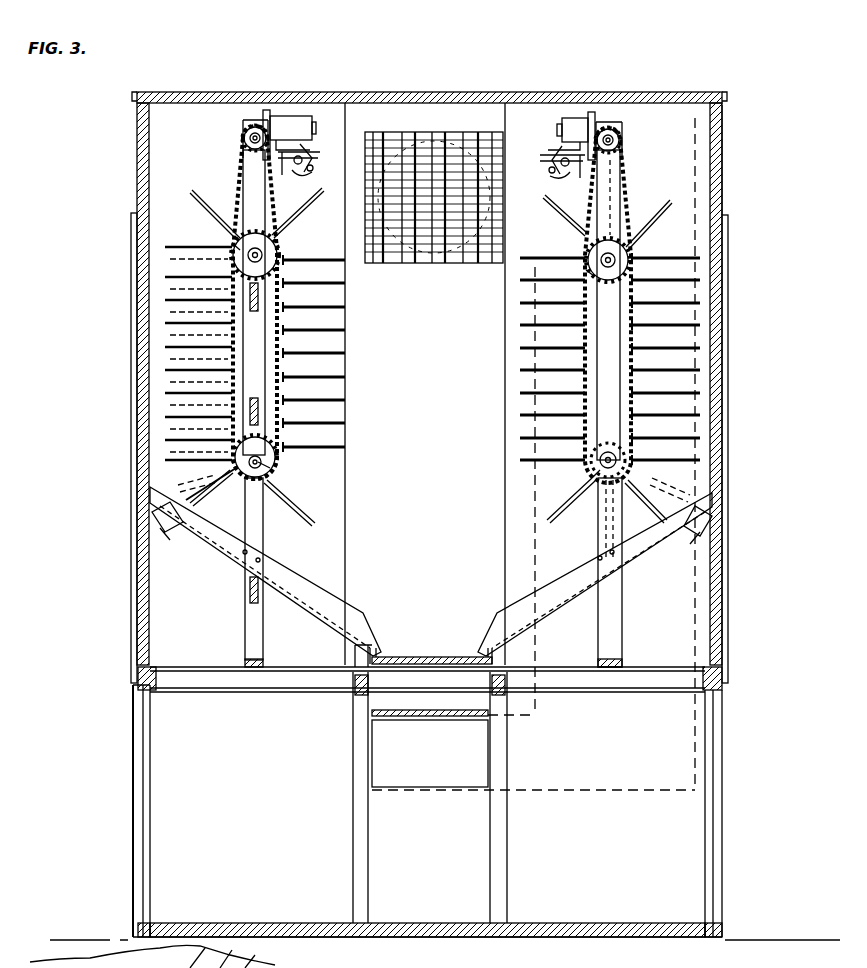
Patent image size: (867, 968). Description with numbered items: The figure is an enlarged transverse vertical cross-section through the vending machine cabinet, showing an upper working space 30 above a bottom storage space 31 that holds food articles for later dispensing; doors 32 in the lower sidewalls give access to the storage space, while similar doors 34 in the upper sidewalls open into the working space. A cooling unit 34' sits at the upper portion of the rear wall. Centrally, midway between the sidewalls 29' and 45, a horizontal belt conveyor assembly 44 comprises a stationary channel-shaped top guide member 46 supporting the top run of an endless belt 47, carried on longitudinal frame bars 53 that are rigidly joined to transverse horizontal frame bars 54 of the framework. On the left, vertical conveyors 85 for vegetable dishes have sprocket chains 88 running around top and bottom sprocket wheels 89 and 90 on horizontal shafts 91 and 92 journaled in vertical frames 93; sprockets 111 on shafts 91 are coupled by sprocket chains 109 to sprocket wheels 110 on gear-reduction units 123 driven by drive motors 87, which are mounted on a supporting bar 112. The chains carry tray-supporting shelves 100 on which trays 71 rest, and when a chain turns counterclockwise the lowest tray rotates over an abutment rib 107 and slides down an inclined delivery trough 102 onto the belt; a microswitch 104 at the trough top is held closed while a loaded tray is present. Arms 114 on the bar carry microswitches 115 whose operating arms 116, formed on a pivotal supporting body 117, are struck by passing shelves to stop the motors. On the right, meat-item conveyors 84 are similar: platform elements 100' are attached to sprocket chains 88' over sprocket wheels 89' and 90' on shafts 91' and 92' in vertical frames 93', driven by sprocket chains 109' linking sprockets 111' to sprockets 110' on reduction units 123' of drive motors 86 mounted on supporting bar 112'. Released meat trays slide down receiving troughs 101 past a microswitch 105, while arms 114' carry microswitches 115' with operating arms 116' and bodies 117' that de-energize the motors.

The sidewall 29' is at (740, 160).
The upper working space 30 is at (195, 143).
The bottom storage space 31 is at (230, 786).
The doors 32 is at (135, 745).
The doors 34 is at (431, 448).
The cooling unit 34' is at (434, 219).
The belt conveyor assembly 44 is at (417, 722).
The sidewall 45 is at (143, 141).
The top guide member 46 is at (370, 658).
The endless belt 47 is at (400, 657).
The belt-conveyor frame bars 53 is at (358, 700).
The horizontal frame bars 54 is at (282, 692).
The trays 71 is at (429, 358).
The vertical meat-item conveyors 84 is at (515, 463).
The vertical conveyors 85 is at (352, 408).
The drive motors 86 is at (576, 118).
The drive motors 87 is at (298, 116).
The sprocket chains 88 is at (254, 302).
The sprocket chains 88' is at (612, 305).
The top sprocket wheels 89 is at (278, 255).
The top sprocket wheels 89' is at (586, 257).
The bottom sprocket wheels 90 is at (284, 471).
The bottom sprocket wheels 90' is at (572, 488).
The upper horizontal shafts 91 is at (306, 213).
The upper horizontal shafts 91' is at (610, 219).
The lower horizontal shafts 92 is at (261, 482).
The lower horizontal shafts 92' is at (635, 458).
The vertical frames 93 is at (235, 572).
The vertical frames 93' is at (631, 572).
The tray-supporting shelves 100 is at (242, 374).
The platform elements 100' is at (579, 331).
The receiving troughs 101 is at (548, 620).
The delivery troughs 102 is at (240, 572).
The microswitch 104 is at (170, 545).
The microswitch 105 is at (712, 535).
The abutment rib 107 is at (215, 493).
The sprocket chains 109 is at (240, 302).
The sprocket chains 109' is at (636, 305).
The sprocket wheels 110 is at (236, 133).
The sprockets 110' is at (640, 138).
The sprockets 111 is at (217, 237).
The sprockets 111' is at (567, 269).
The supporting bar 112 is at (296, 174).
The supporting bar 112' is at (567, 178).
The horizontally-extending arms 114 is at (283, 112).
The horizontally-extending arms 114' is at (610, 111).
The microswitches 115 is at (325, 145).
The microswitches 115' is at (538, 151).
The operating arms 116 is at (324, 172).
The operating arms 116' is at (541, 181).
The pivotal supporting body 117 is at (330, 107).
The right motor bracket 117' is at (549, 106).
The gear-reduction units 123 is at (253, 111).
The reduction units 123' is at (634, 111).